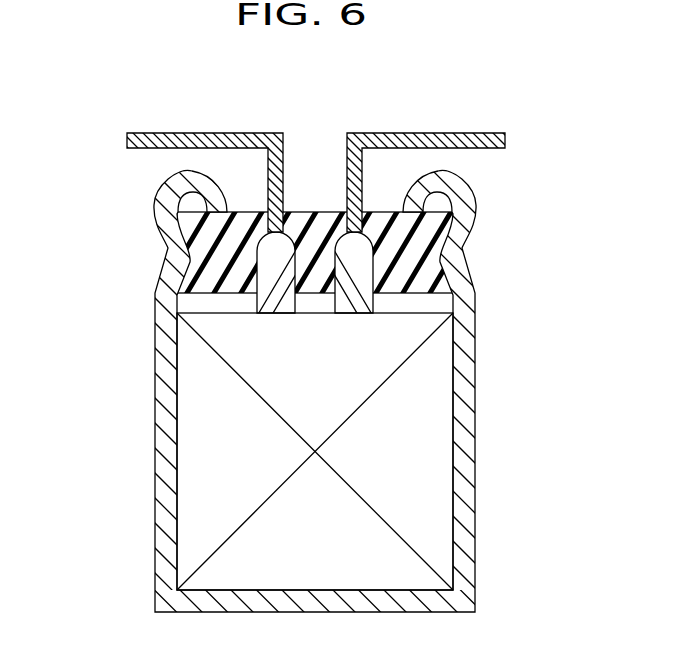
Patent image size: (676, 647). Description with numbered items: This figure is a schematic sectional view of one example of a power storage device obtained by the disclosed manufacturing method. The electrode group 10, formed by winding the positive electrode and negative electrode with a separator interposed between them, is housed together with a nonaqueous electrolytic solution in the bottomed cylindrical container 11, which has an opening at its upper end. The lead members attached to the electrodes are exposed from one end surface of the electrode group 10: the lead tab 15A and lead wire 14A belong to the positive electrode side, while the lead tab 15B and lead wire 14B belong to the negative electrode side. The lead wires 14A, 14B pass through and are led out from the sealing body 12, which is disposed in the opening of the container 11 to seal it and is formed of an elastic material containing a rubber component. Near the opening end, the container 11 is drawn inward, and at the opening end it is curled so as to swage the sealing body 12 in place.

The electrode group 10 is at (213, 430).
The bottomed cylindrical container 11 is at (465, 398).
The sealing body 12 is at (410, 258).
The lead wire 14A is at (201, 133).
The lead wire 14B is at (435, 133).
The lead tab 15A is at (277, 263).
The lead tab 15B is at (352, 283).